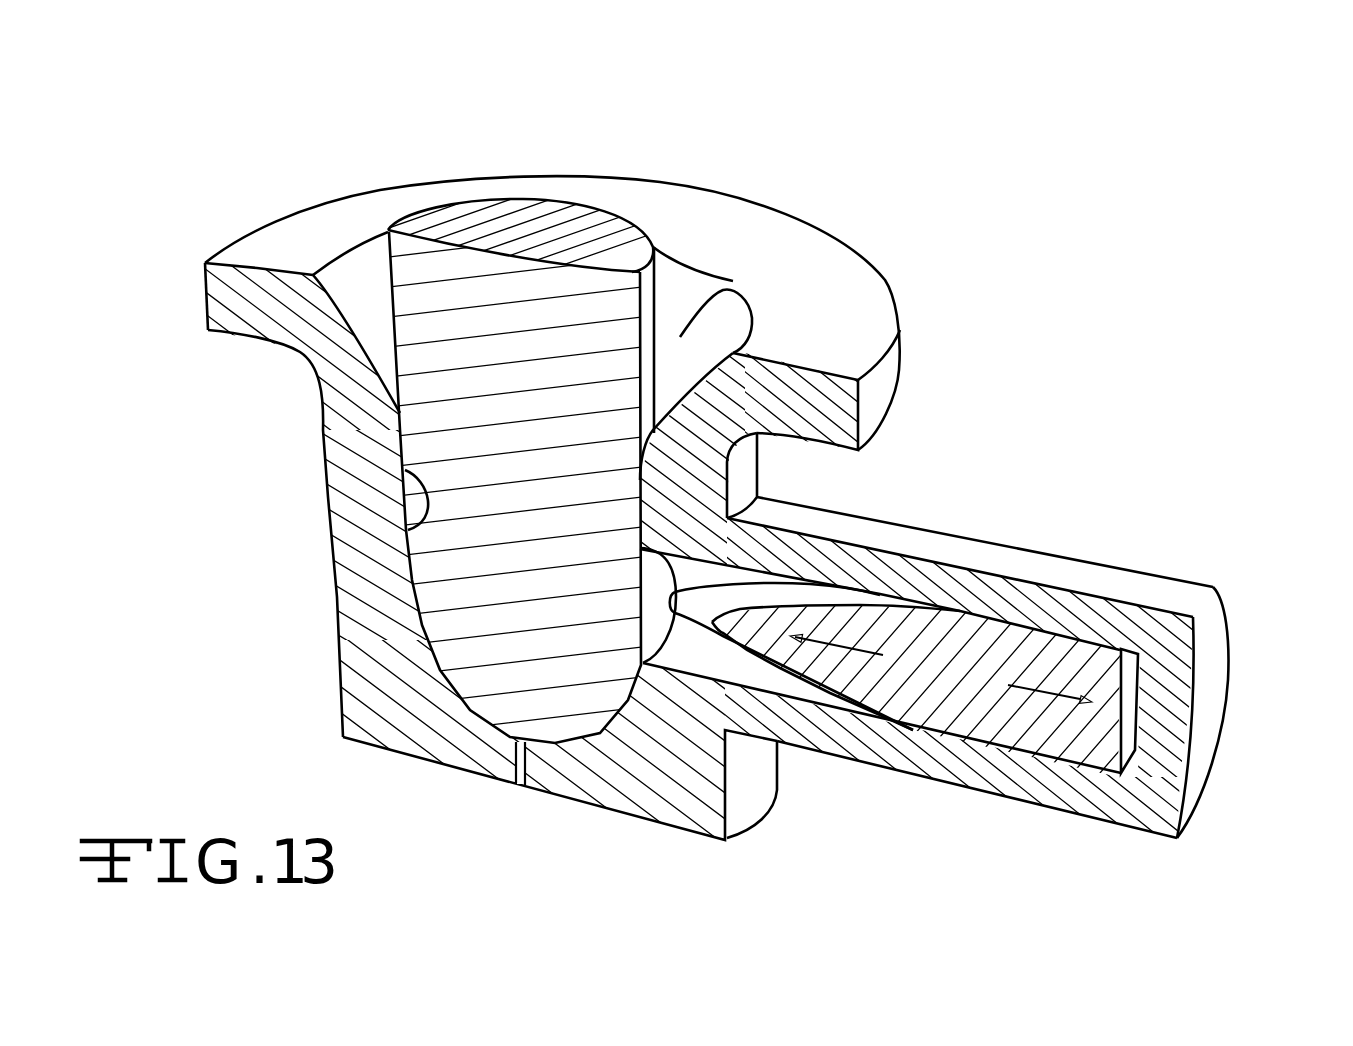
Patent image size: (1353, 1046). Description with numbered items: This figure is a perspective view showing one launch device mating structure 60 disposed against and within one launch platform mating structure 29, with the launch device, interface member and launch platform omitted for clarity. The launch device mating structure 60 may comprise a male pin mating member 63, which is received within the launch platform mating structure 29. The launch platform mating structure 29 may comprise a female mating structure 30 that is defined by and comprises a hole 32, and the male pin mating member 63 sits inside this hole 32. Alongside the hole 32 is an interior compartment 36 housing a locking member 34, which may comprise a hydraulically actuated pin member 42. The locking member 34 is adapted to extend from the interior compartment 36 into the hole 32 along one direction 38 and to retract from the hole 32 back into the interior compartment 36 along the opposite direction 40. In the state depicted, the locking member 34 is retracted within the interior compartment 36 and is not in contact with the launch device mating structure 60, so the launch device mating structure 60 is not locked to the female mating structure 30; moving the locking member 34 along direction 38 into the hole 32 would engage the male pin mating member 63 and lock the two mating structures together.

The launch platform mating structure 29 is at (812, 174).
The female mating structure 30 is at (680, 337).
The hole 32 is at (405, 470).
The locking member 34 is at (940, 690).
The hydraulically actuated pin member 42 is at (977, 676).
The interior compartment 36 is at (1130, 695).
The direction 38 is at (850, 650).
The direction 40 is at (1062, 676).
The launch device mating structure 60 is at (652, 318).
The male pin mating member 63 is at (568, 743).